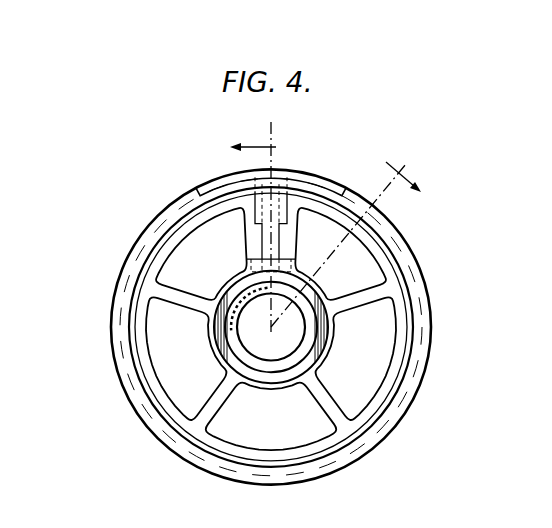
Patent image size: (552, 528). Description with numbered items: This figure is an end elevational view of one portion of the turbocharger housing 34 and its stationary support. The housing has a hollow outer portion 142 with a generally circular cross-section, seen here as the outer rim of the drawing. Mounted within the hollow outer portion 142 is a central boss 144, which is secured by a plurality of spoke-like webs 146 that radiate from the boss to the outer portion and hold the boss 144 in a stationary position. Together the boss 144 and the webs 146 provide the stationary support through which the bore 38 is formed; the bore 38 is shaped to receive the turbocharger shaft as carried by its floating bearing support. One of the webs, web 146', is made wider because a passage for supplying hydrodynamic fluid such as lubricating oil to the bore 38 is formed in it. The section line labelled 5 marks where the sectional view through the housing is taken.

The section line 5- 5 is at (333, 225).
The turbocharger housing 34 is at (422, 281).
The bore 38 is at (289, 307).
The hollow outer portion 142 is at (421, 373).
The boss 144 is at (262, 384).
The spoke-like webs 146 is at (271, 329).
The web 146' is at (247, 224).